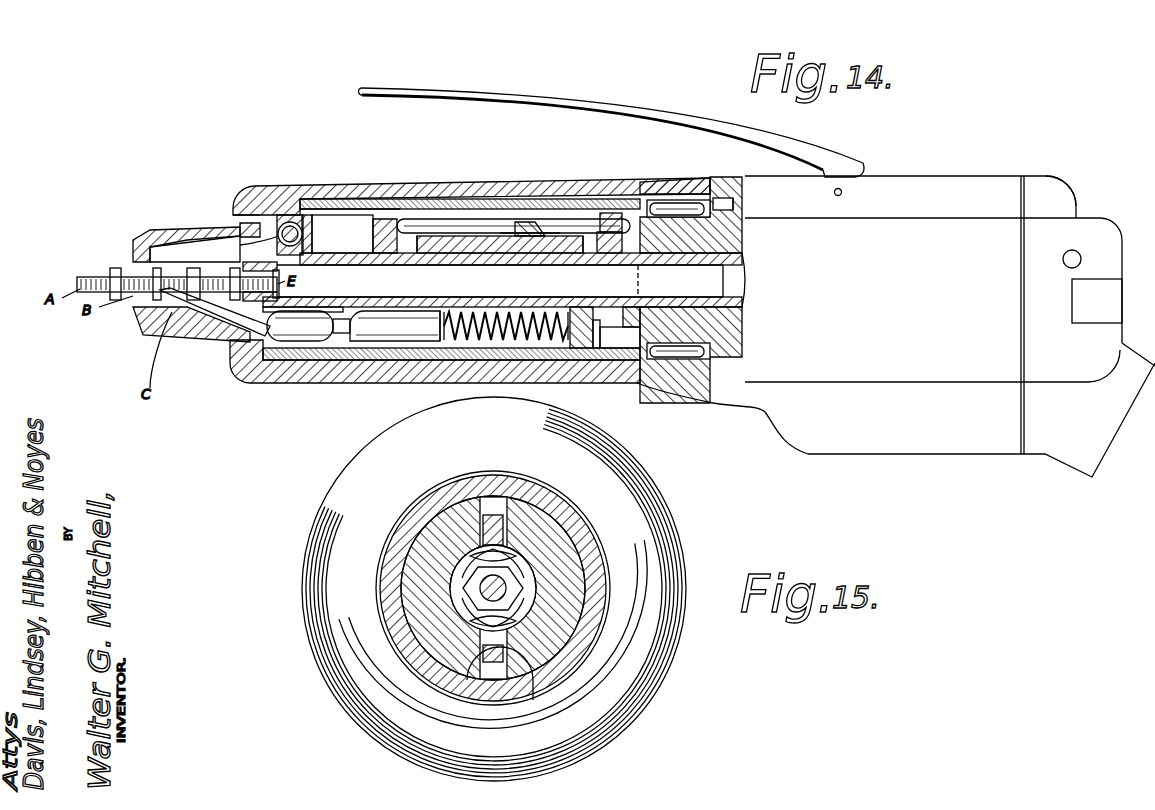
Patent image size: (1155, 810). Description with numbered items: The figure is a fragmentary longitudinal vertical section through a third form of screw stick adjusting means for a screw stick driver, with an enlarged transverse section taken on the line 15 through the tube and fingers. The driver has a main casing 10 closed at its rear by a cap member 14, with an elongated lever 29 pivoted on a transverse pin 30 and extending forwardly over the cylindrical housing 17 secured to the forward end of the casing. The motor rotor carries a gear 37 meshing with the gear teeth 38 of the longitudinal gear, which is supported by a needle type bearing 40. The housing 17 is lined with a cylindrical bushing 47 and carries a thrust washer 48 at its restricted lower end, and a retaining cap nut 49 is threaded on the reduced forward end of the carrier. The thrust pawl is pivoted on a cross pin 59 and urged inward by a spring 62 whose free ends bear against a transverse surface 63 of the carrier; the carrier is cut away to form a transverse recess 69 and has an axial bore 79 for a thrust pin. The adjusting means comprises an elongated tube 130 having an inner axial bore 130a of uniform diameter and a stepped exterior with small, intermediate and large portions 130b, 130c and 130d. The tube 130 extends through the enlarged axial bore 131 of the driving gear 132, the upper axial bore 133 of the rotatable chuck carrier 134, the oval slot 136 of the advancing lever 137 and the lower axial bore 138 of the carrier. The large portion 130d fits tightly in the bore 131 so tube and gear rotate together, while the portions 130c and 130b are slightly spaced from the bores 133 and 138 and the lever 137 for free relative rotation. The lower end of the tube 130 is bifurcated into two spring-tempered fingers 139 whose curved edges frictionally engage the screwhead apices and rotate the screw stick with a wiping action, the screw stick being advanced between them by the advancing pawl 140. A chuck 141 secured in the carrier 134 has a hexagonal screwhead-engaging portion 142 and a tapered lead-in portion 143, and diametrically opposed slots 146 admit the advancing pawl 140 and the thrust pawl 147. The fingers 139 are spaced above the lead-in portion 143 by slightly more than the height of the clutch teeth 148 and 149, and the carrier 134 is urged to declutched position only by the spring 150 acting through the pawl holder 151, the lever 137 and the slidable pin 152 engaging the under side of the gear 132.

In FIG. 14, the main casing 10 is at (942, 185).
In FIG. 14, the cap member 14 is at (1052, 198).
In FIG. 14, the section line 15- 15 is at (248, 148).
In FIG. 14, the cylindrical housing 17 is at (458, 263).
In FIG. 15, the cylindrical housing 17 is at (672, 546).
In FIG. 14, the lever 29 is at (590, 100).
In FIG. 14, the transverse pin 30 is at (840, 194).
In FIG. 14, the gear 37 is at (745, 368).
In FIG. 14, the gear teeth 38 is at (725, 200).
In FIG. 14, the needle type bearing 40 is at (685, 201).
In FIG. 14, the cylindrical bushing 47 is at (426, 262).
In FIG. 14, the thrust washer 48 is at (255, 225).
In FIG. 14, the retaining cap nut 49 is at (158, 333).
In FIG. 15, the retaining cap nut 49 is at (593, 616).
In FIG. 14, the cross pin 59 is at (290, 220).
In FIG. 14, the spring 62 is at (262, 208).
In FIG. 14, the transverse surface 63 is at (327, 255).
In FIG. 14, the transverse recess 69 is at (357, 218).
In FIG. 14, the bore 79 is at (526, 243).
In FIG. 14, the elongated tube 130 is at (438, 262).
In FIG. 15, the elongated tube 130 is at (530, 557).
In FIG. 14, the inner axial bore 130a is at (388, 300).
In FIG. 15, the inner axial bore 130a is at (467, 603).
In FIG. 14, the small diameter tube portion 130b is at (352, 200).
In FIG. 15, the small diameter tube portion 130b is at (463, 583).
In FIG. 14, the intermediate diameter tube portion 130c is at (505, 222).
In FIG. 14, the large diameter tube portion 130d is at (660, 262).
In FIG. 14, the enlarged axial bore 131 is at (742, 318).
In FIG. 14, the driving gear 132 is at (690, 322).
In FIG. 14, the upper axial bore 133 is at (482, 255).
In FIG. 14, the chuck carrier 134 is at (548, 247).
In FIG. 15, the chuck carrier 134 is at (553, 567).
In FIG. 14, the oval slot 136 is at (388, 243).
In FIG. 14, the advancing lever 137 is at (387, 228).
In FIG. 14, the lower axial bore 138 is at (300, 308).
In FIG. 14, the fingers 139 is at (243, 270).
In FIG. 15, the fingers 139 is at (470, 553).
In FIG. 14, the advancing pawl 140 is at (195, 258).
In FIG. 15, the advancing pawl 140 is at (520, 668).
In FIG. 14, the chuck 141 is at (140, 272).
In FIG. 14, the hexagonal screwhead-engaging portion 142 is at (143, 330).
In FIG. 14, the lead-in portion 143 is at (176, 243).
In FIG. 14, the slots 146 is at (172, 318).
In FIG. 14, the thrust pawl 147 is at (202, 252).
In FIG. 15, the thrust pawl 147 is at (500, 523).
In FIG. 14, the clutch teeth 148 is at (630, 328).
In FIG. 14, the clutch teeth 149 is at (590, 332).
In FIG. 14, the spring 150 is at (484, 318).
In FIG. 14, the pawl holder 151 is at (362, 333).
In FIG. 14, the slidable pin 152 is at (566, 235).